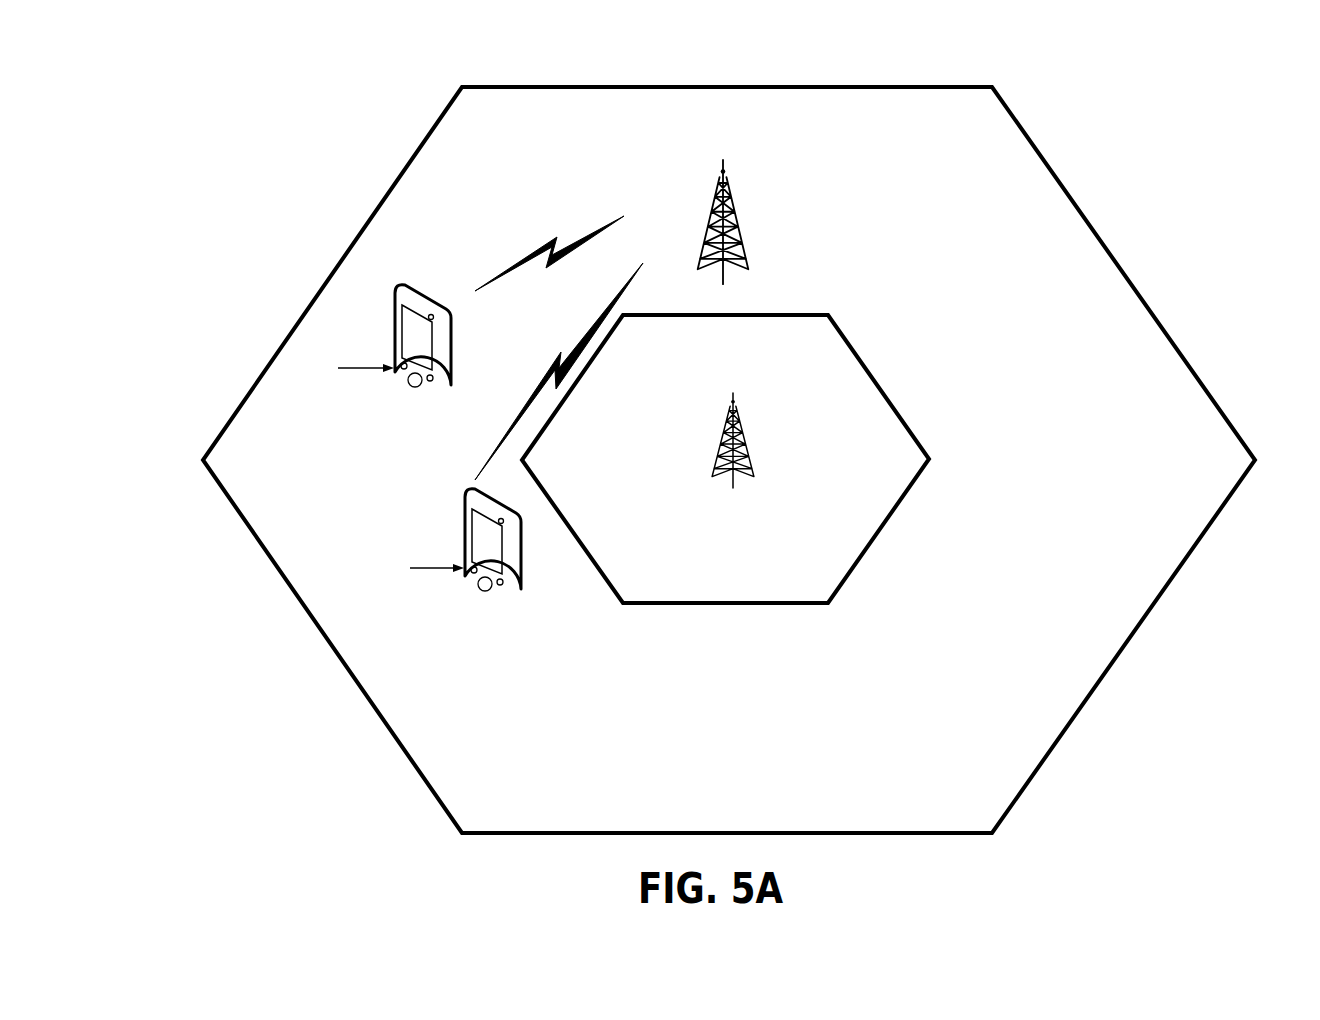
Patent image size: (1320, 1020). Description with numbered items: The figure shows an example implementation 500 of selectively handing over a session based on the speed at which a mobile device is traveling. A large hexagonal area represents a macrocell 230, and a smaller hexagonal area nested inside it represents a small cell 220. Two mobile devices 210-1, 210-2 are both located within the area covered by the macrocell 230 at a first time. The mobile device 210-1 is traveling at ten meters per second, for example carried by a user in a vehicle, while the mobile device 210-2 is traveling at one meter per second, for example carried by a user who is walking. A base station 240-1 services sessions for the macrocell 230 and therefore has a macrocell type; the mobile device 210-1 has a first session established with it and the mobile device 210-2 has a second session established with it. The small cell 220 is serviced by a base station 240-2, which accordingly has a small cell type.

The example implementation 500 is at (245, 74).
The macrocell 230 is at (407, 163).
The small cell 220 is at (904, 421).
The base station 240-1 is at (834, 247).
The base station 240-2 is at (766, 539).
The mobile device 210-1 is at (457, 454).
The mobile device 210-2 is at (520, 650).